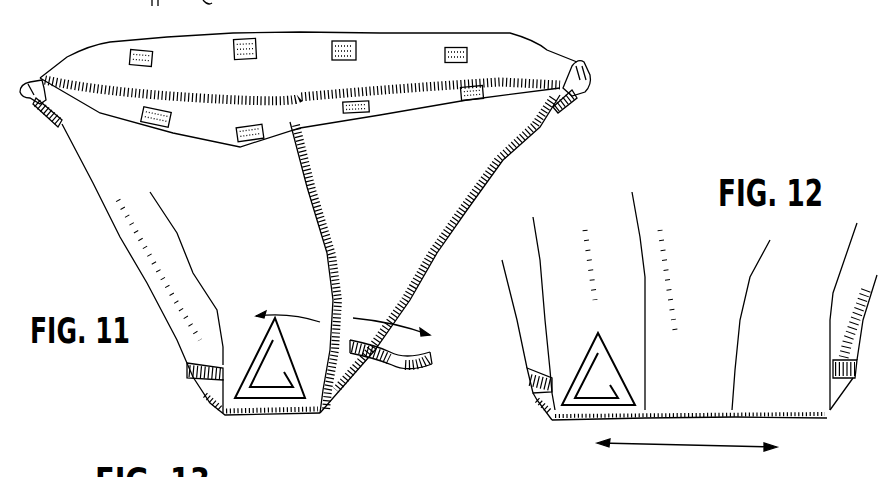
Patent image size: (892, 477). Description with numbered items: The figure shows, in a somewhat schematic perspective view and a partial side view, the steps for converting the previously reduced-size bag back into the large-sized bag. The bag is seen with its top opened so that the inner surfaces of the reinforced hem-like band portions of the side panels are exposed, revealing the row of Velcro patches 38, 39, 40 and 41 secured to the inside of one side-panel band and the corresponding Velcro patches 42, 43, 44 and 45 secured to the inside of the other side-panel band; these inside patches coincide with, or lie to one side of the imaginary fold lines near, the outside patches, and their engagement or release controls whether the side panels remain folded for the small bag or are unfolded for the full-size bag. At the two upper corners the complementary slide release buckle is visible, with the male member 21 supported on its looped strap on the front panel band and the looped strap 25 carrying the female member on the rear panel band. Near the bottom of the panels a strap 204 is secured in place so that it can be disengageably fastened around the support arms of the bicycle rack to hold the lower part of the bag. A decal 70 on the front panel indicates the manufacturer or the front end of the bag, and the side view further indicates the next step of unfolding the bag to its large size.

In FIG. 11, the male member 21 is at (580, 88).
In FIG. 11, the looped strap 25 is at (23, 103).
In FIG. 11, the Velcro patch 38 is at (470, 18).
In FIG. 11, the Velcro patch 39 is at (350, 15).
In FIG. 11, the Velcro patch 40 is at (265, 22).
In FIG. 11, the Velcro patch 41 is at (140, 48).
In FIG. 11, the Velcro patch 42 is at (152, 125).
In FIG. 11, the Velcro patch 43 is at (250, 142).
In FIG. 11, the Velcro patch 44 is at (357, 117).
In FIG. 11, the Velcro patch 45 is at (472, 102).
In FIG. 11, the decal 70 is at (313, 413).
In FIG. 12, the decal 70 is at (593, 388).
In FIG. 11, the strap 204 is at (413, 373).